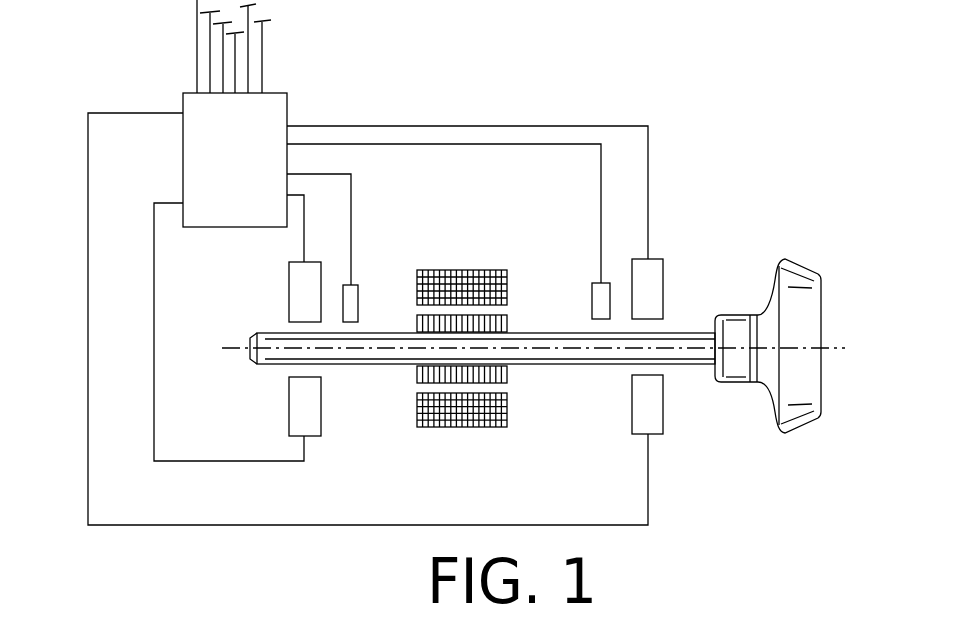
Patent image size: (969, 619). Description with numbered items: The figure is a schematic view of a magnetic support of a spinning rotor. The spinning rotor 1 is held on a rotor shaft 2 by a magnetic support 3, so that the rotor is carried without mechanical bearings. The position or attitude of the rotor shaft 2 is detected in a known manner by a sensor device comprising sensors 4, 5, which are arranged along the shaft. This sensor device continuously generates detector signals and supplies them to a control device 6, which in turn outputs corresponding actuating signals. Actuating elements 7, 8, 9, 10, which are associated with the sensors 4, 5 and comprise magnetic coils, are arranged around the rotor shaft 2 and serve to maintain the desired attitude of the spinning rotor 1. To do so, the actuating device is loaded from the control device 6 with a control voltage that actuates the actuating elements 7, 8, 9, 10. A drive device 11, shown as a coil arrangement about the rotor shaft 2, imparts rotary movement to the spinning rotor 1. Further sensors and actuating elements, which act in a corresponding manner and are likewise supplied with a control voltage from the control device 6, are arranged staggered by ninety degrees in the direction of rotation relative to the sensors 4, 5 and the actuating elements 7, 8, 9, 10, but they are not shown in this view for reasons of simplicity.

The spinning rotor 1 is at (742, 392).
The rotor shaft 2 is at (630, 352).
The magnetic support 3 is at (697, 205).
The sensor 4 is at (352, 302).
The sensor 5 is at (601, 300).
The control device 6 is at (267, 110).
The actuating element 7 is at (297, 291).
The actuating element 8 is at (298, 403).
The actuating element 9 is at (655, 290).
The actuating element 10 is at (655, 422).
The drive device 11 is at (465, 256).